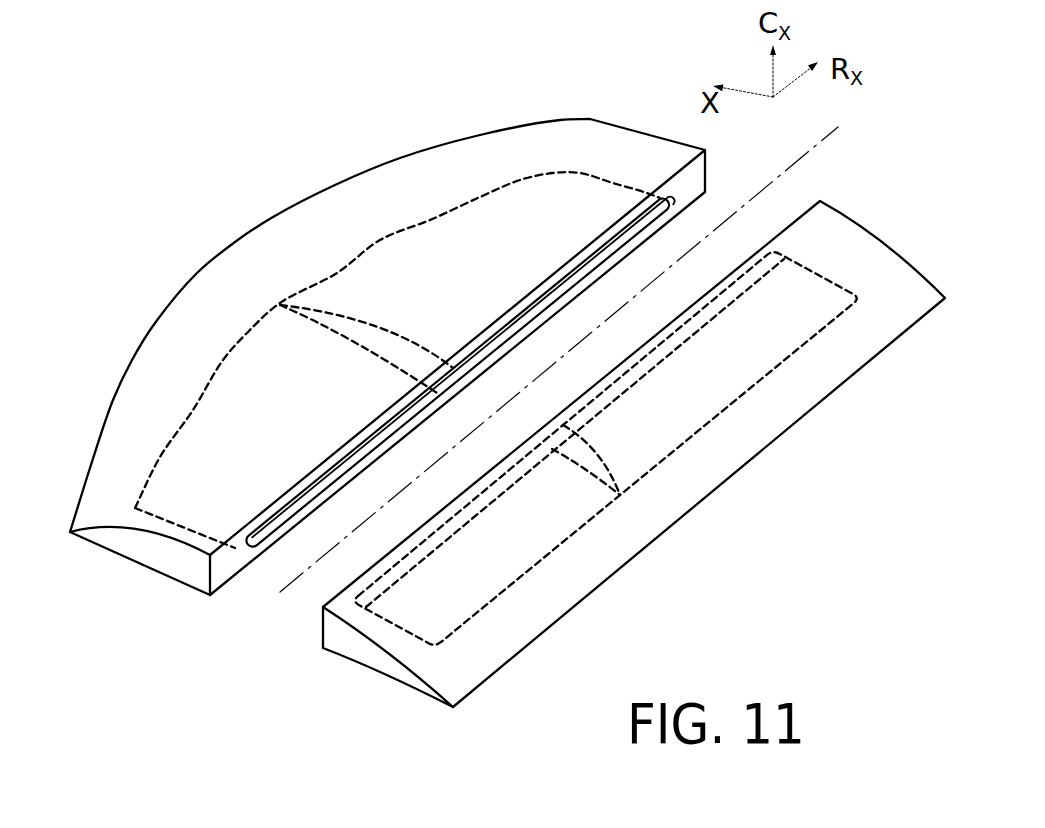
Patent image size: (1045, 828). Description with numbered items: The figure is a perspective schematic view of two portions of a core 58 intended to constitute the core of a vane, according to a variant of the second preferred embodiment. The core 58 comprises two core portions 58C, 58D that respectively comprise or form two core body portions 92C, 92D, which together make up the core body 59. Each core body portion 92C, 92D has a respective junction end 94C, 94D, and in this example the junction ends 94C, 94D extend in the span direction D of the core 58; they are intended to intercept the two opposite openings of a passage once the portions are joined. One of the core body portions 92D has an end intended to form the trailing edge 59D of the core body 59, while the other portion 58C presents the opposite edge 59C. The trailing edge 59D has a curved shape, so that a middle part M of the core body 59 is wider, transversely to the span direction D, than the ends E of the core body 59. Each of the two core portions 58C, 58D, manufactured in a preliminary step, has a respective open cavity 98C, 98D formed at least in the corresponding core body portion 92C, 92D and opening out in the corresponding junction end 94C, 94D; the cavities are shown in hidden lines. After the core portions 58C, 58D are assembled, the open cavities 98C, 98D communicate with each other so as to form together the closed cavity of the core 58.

The trailing edge 59D is at (200, 272).
The core body edge 59C is at (531, 642).
The core portion 58D is at (123, 632).
The core body portion 92D is at (160, 562).
The core portion 58C is at (336, 672).
The core body portion 92C is at (336, 646).
The core 58 is at (487, 447).
The core body 59 is at (340, 731).
The junction end 94D is at (228, 563).
The junction end 94C is at (722, 271).
The open cavity 98D is at (405, 227).
The open cavity 98C is at (648, 476).
The middle part M is at (270, 284).
The ends E is at (677, 137).
The span direction D is at (800, 167).